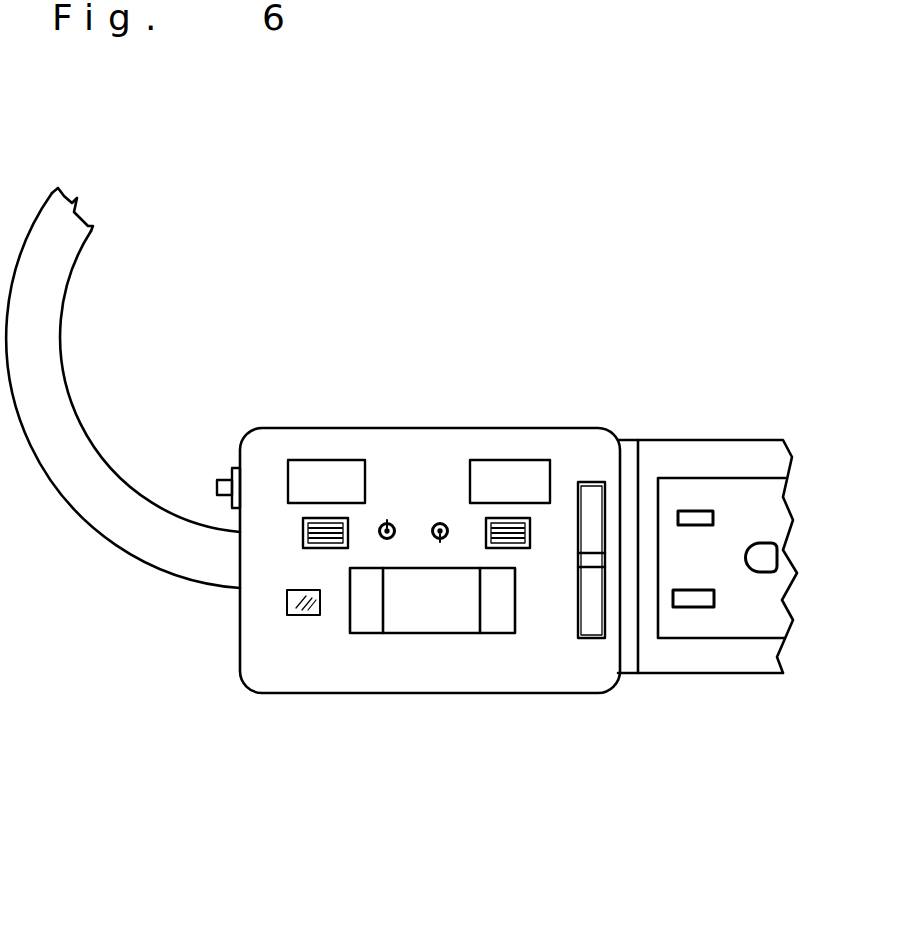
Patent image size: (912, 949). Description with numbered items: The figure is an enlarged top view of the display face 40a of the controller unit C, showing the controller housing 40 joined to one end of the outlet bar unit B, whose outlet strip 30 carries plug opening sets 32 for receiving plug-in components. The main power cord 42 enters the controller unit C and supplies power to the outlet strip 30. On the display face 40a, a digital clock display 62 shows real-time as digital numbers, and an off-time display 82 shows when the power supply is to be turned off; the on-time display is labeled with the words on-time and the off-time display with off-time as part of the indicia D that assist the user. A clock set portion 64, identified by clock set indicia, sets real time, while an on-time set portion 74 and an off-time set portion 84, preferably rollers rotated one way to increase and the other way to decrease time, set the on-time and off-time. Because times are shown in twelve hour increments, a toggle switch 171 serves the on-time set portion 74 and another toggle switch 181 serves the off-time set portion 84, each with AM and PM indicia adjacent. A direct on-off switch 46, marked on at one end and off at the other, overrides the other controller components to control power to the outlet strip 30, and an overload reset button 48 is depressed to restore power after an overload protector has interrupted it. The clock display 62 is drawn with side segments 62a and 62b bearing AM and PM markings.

The controller housing 40 is at (547, 428).
The display face 40a is at (480, 672).
The outlet strip 30 is at (740, 638).
The plug opening sets 32 is at (733, 528).
The main power cord 42 is at (65, 327).
The direct on-off switch 46 is at (607, 500).
The overload reset button 48 is at (223, 478).
The digital clock display 62 is at (430, 633).
The AM indicator segment 62a is at (497, 633).
The PM indicator segment 62b is at (368, 633).
The clock set portion 64 is at (287, 607).
The on-time set portion 74 is at (320, 548).
The off-time display 82 is at (288, 475).
The off-time set portion 84 is at (520, 548).
The toggle switch 171 is at (391, 520).
The toggle switch 181 is at (438, 518).
The outlet bar unit B is at (702, 690).
The controller unit C is at (243, 712).
The indicia D is at (318, 430).